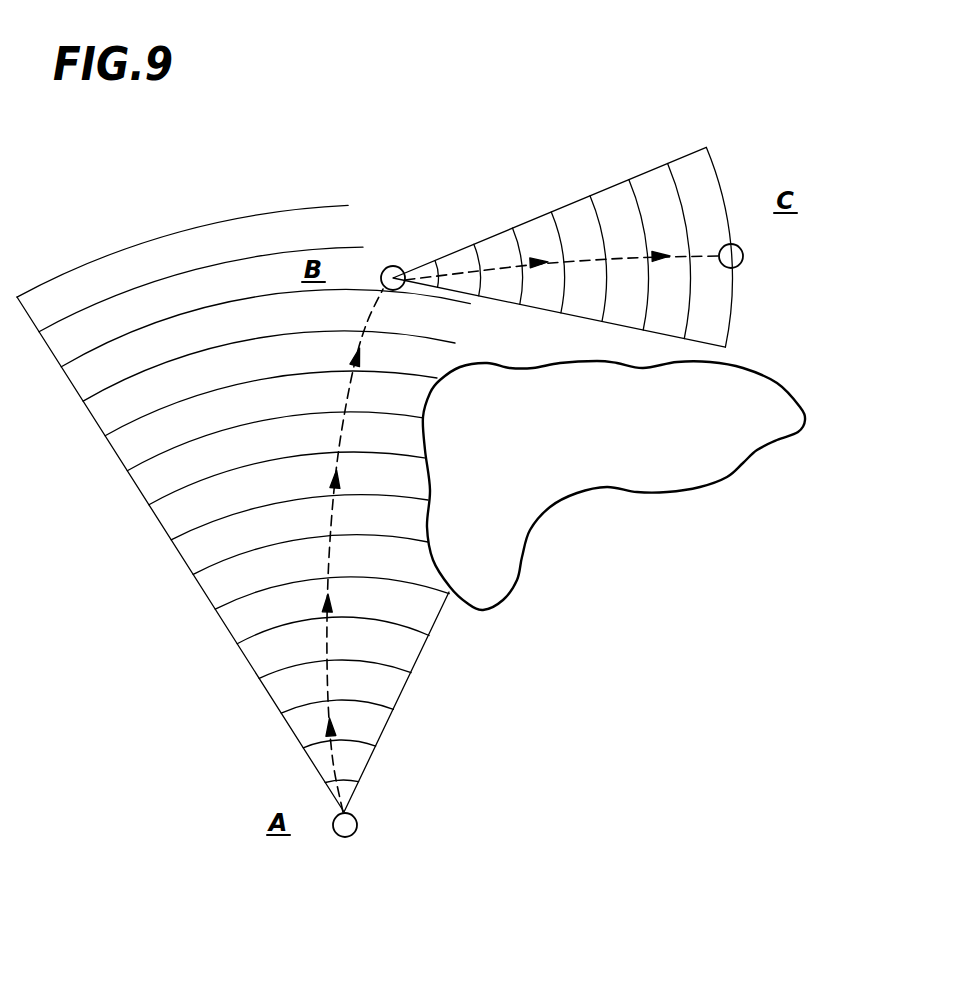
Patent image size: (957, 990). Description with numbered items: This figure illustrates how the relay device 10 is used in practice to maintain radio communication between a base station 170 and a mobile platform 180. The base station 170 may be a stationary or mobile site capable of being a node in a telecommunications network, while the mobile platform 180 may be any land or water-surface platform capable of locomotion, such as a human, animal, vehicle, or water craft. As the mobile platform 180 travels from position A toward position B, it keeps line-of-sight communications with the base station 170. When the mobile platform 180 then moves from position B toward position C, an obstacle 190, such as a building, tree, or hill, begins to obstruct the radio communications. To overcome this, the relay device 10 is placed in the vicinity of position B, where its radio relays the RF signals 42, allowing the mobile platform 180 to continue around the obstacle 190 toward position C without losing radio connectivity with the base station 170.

The relay device 10 is at (394, 266).
The RF signals 42 is at (213, 613).
The base station 170 is at (357, 829).
The mobile platform 180 is at (743, 260).
The obstacle 190 is at (643, 464).